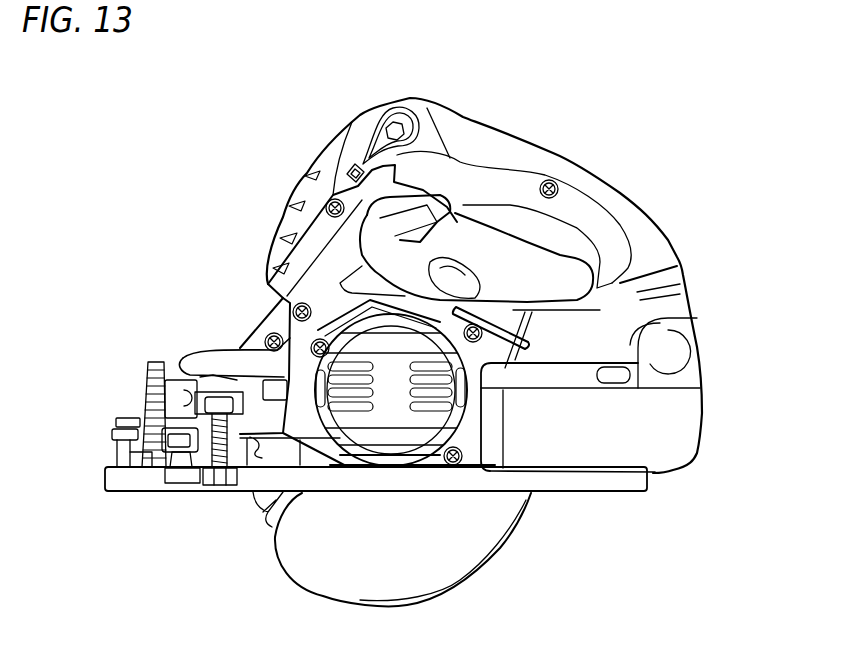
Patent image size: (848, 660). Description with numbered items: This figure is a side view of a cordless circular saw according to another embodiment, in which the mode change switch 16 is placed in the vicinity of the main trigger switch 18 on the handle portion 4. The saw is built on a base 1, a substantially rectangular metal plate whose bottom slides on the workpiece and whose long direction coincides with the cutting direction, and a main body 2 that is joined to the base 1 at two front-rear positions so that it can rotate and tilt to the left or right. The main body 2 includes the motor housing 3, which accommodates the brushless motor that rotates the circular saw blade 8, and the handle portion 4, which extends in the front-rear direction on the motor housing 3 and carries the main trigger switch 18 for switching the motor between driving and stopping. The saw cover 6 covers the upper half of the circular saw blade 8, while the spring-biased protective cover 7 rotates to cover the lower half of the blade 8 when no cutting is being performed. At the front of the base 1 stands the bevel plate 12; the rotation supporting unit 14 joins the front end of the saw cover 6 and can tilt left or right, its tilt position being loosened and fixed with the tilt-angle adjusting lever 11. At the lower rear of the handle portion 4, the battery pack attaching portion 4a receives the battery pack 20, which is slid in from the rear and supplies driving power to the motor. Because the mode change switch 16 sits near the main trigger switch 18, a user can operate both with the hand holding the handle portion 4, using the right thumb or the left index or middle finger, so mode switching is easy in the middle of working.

The base 1 is at (102, 493).
The main body 2 is at (651, 206).
The motor housing 3 is at (390, 410).
The handle portion 4 is at (518, 140).
The battery pack attaching portion 4a is at (590, 357).
The saw cover 6 is at (272, 340).
The protective cover 7 is at (480, 572).
The circular saw blade 8 is at (262, 512).
The tilt-angle adjusting lever 11 is at (113, 433).
The bevel plate 12 is at (155, 360).
The rotation supporting unit 14 is at (174, 373).
The mode change switch 16 is at (350, 168).
The main trigger switch 18 is at (407, 213).
The battery pack 20 is at (677, 452).